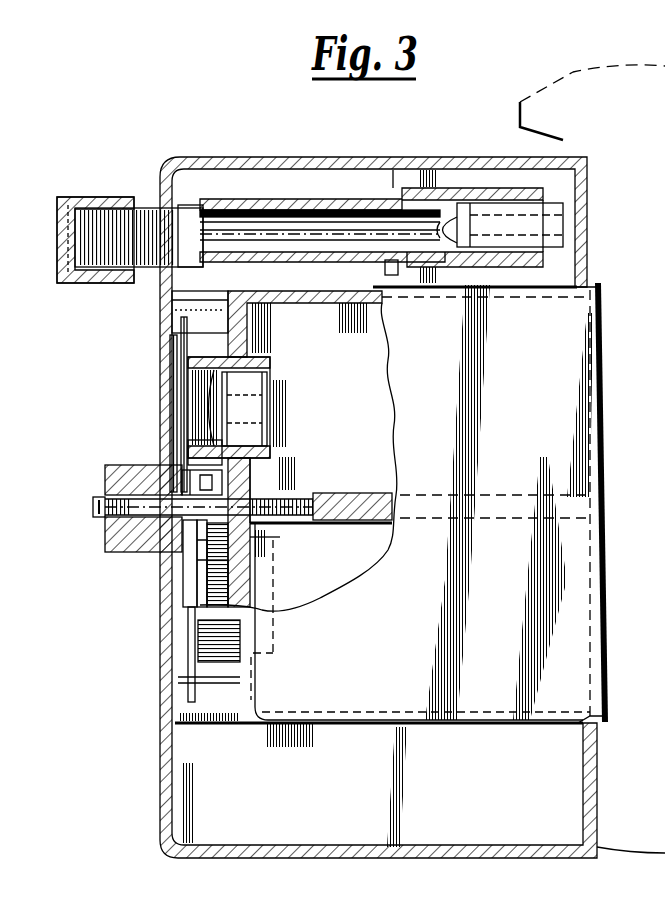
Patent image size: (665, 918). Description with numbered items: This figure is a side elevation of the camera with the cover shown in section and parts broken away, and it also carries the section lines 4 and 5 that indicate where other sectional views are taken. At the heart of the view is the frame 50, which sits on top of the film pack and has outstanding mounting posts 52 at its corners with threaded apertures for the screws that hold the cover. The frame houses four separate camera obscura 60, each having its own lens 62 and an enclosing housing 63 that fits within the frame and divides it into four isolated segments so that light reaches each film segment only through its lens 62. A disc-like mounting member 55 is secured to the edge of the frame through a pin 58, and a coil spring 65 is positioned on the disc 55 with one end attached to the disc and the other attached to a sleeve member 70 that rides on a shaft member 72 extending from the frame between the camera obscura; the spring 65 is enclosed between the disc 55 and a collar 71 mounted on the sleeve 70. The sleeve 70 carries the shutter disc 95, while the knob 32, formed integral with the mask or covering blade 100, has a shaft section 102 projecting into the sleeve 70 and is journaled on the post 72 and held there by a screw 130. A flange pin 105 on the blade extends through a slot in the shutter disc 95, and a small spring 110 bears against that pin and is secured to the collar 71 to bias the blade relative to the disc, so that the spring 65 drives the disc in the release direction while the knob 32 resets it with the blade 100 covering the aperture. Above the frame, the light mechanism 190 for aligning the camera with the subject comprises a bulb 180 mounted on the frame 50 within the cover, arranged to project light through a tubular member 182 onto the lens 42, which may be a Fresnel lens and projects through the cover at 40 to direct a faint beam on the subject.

The cover opening for lens 40 is at (160, 208).
The lens 42 is at (67, 243).
The tubular member 182 is at (277, 202).
The light mechanism 190 is at (345, 190).
The bulb 180 is at (443, 230).
The section line 4- 4 is at (212, 763).
The section line 5- 5 is at (175, 752).
The mask or covering blade 100 is at (172, 365).
The lens 62 is at (265, 367).
The camera obscura 60 is at (253, 412).
The flange pin 105 is at (190, 417).
The small spring 110 is at (180, 453).
The knob 32 is at (105, 465).
The screw 130 is at (95, 503).
The shaft section 102 is at (147, 553).
The shaft member 72 is at (250, 482).
The sleeve member 70 is at (243, 492).
The enclosing housing 63 is at (345, 495).
The disc-like mounting member 55 is at (252, 563).
The pin 58 is at (253, 587).
The collar 71 is at (207, 572).
The coil spring 65 is at (228, 587).
The shutter disc 95 is at (193, 635).
The mounting posts 52 is at (188, 700).
The frame 50 is at (370, 728).